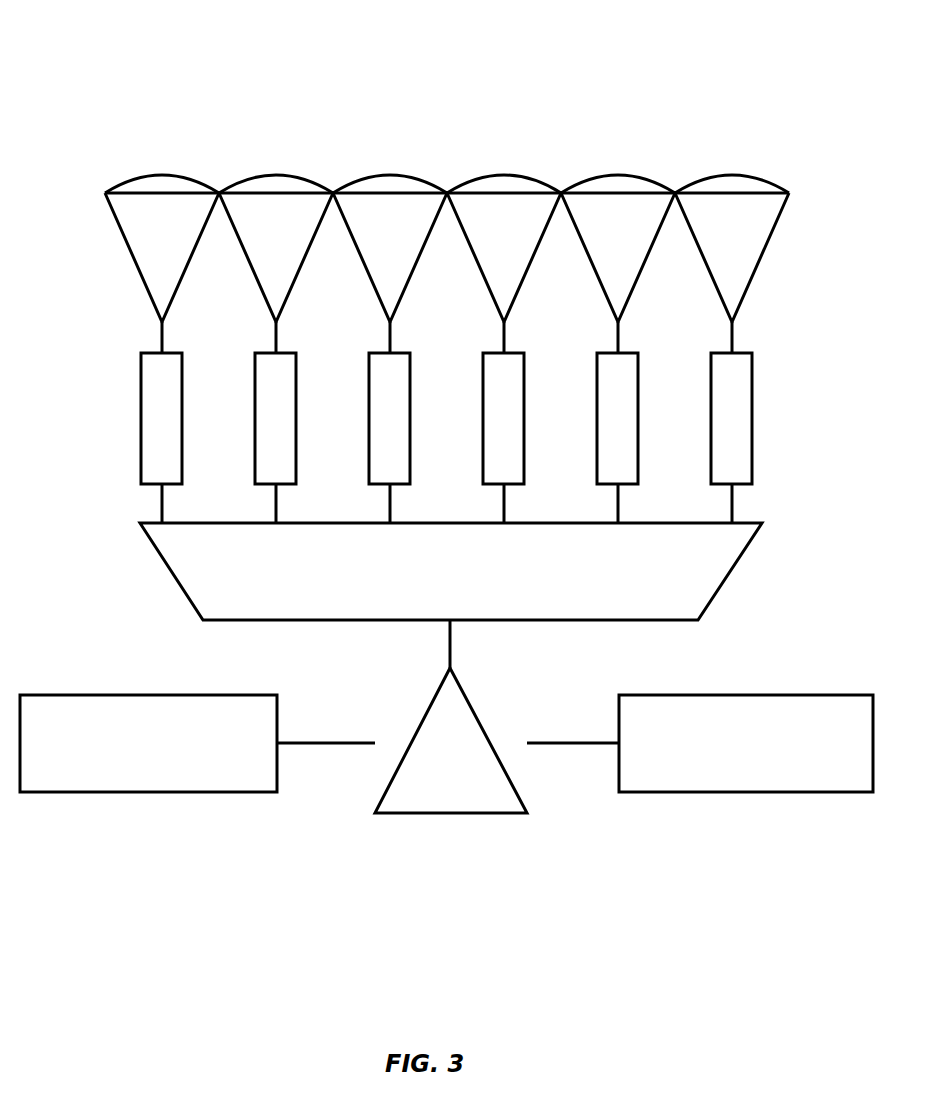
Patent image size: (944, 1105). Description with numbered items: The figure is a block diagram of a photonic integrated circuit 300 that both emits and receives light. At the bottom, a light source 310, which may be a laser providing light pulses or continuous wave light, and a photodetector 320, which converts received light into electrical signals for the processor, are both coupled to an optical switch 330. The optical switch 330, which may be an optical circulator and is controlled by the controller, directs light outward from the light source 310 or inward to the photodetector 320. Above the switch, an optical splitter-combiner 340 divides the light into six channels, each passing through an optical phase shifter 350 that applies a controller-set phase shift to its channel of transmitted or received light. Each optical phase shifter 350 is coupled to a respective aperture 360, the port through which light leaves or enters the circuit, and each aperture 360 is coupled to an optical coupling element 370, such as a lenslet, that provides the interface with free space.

The photonic integrated circuit 300 is at (80, 82).
The light source 310 is at (112, 694).
The photodetector 320 is at (748, 694).
The optical switch 330 is at (433, 698).
The optical splitter-combiner 340 is at (145, 542).
The optical phase shifters 350 is at (138, 392).
The apertures 360 is at (122, 243).
The optical coupling elements 370 is at (118, 181).